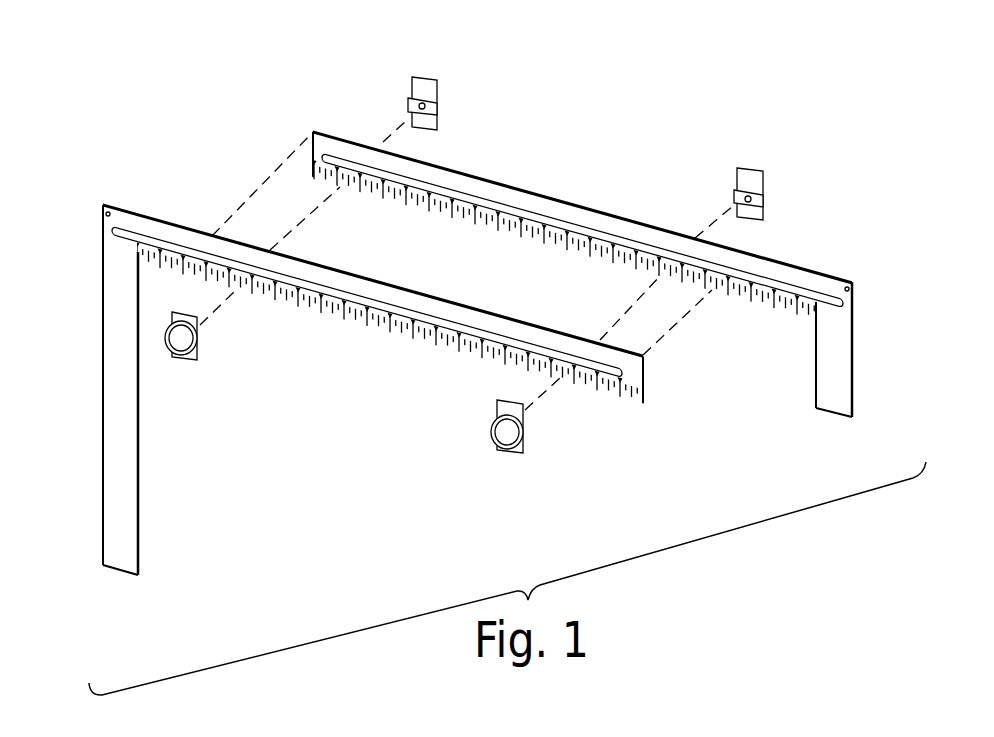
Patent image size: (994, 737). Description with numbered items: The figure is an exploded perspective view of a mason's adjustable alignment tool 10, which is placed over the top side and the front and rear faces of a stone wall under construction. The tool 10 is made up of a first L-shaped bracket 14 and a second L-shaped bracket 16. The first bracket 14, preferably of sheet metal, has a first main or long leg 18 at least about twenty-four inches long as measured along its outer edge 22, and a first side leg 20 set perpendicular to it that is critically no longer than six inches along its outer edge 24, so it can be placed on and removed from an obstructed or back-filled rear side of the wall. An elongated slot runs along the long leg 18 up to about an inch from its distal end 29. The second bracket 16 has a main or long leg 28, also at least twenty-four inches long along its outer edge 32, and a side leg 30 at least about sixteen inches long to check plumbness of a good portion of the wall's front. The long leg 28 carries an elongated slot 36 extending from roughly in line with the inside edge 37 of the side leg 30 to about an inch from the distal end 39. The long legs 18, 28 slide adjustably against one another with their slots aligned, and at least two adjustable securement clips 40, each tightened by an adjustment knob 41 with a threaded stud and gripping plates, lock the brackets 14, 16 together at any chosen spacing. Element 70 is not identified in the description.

The mason's adjustable alignment tool 10 is at (346, 463).
The first L-shaped bracket 14 is at (867, 378).
The second L-shaped bracket 16 is at (118, 390).
The first main or long leg 18 is at (541, 197).
The first side leg 20 is at (830, 410).
The outer edge 22 is at (496, 181).
The outer edge 24 is at (855, 388).
The main or long leg 28 is at (411, 320).
The distal end 29 is at (313, 137).
The side leg 30 is at (122, 503).
The outer edge 32 is at (100, 500).
The elongated slot 36 is at (314, 288).
The inside edge 37 is at (138, 440).
The distal end 39 is at (647, 378).
The adjustable securement clip 40 is at (418, 88).
The adjustment knob 41 is at (178, 346).
The slot of rear rail 70 is at (793, 273).